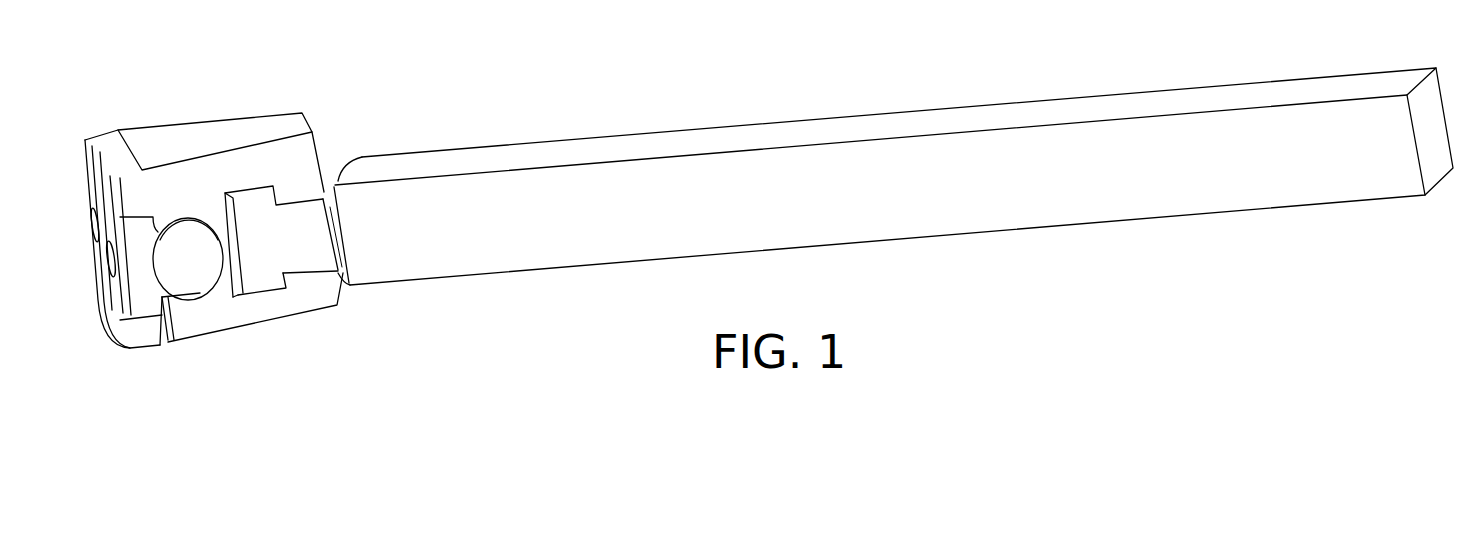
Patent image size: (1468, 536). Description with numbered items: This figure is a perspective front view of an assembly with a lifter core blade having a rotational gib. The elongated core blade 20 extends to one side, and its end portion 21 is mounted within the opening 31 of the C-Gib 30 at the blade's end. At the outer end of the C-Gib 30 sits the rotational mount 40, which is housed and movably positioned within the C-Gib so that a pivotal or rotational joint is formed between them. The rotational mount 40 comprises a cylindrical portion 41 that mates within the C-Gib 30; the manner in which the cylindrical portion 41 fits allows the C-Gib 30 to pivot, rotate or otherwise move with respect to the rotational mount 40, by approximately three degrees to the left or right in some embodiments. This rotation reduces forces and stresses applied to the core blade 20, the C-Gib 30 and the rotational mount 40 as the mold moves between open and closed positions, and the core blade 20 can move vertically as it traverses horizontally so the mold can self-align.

The core blade 20 is at (943, 170).
The end portion 21 is at (257, 232).
The C-Gib 30 is at (178, 146).
The opening 31 is at (180, 219).
The rotational mount 40 is at (110, 297).
The cylindrical portion 41 is at (187, 268).